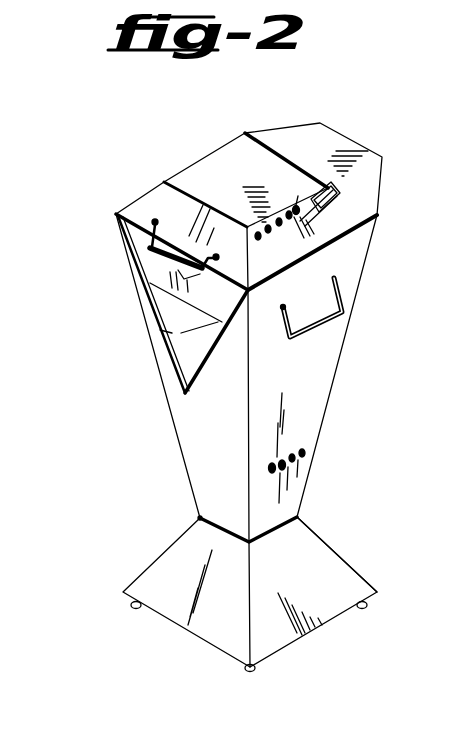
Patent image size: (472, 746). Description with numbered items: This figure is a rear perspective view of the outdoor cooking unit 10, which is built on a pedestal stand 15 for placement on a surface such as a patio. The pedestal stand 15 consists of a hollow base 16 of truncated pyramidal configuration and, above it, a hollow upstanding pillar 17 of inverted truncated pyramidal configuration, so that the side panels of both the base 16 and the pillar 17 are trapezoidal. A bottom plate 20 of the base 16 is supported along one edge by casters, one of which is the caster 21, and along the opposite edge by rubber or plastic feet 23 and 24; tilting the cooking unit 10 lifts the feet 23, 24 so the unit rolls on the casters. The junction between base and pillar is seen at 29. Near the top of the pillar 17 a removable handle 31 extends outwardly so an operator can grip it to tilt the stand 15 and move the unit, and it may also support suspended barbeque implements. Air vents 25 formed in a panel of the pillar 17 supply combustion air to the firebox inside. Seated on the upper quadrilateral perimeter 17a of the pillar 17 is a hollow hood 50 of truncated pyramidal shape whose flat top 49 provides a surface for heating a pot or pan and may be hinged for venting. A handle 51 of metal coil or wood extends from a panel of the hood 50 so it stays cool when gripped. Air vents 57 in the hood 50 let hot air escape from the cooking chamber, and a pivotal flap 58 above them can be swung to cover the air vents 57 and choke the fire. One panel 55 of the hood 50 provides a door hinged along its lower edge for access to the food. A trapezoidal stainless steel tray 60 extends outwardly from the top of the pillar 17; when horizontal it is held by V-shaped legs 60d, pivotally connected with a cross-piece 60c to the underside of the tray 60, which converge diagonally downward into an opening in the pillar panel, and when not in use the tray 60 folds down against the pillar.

The outdoor cooking unit 10 is at (88, 155).
The pedestal stand 15 is at (80, 274).
The hollow base 16 is at (168, 556).
The hollow pillar 17 is at (160, 392).
The upper quadrilateral perimeter of the pillar 17a is at (379, 216).
The bottom plate 20 is at (330, 622).
The caster 21 is at (367, 608).
The foot 23 is at (136, 608).
The foot 24 is at (253, 671).
The air vents 25 is at (290, 456).
The base/housing junction 29 is at (200, 517).
The removable handle 31 is at (333, 318).
The flat top 49 is at (245, 148).
The hood 50 is at (141, 197).
The handle 51 is at (150, 244).
The panel 55 is at (334, 214).
The air vents 57 is at (259, 230).
The pivotal flap 58 is at (338, 189).
The tray 60 is at (313, 140).
The cross-piece 60c is at (181, 333).
The legs 60d is at (167, 332).